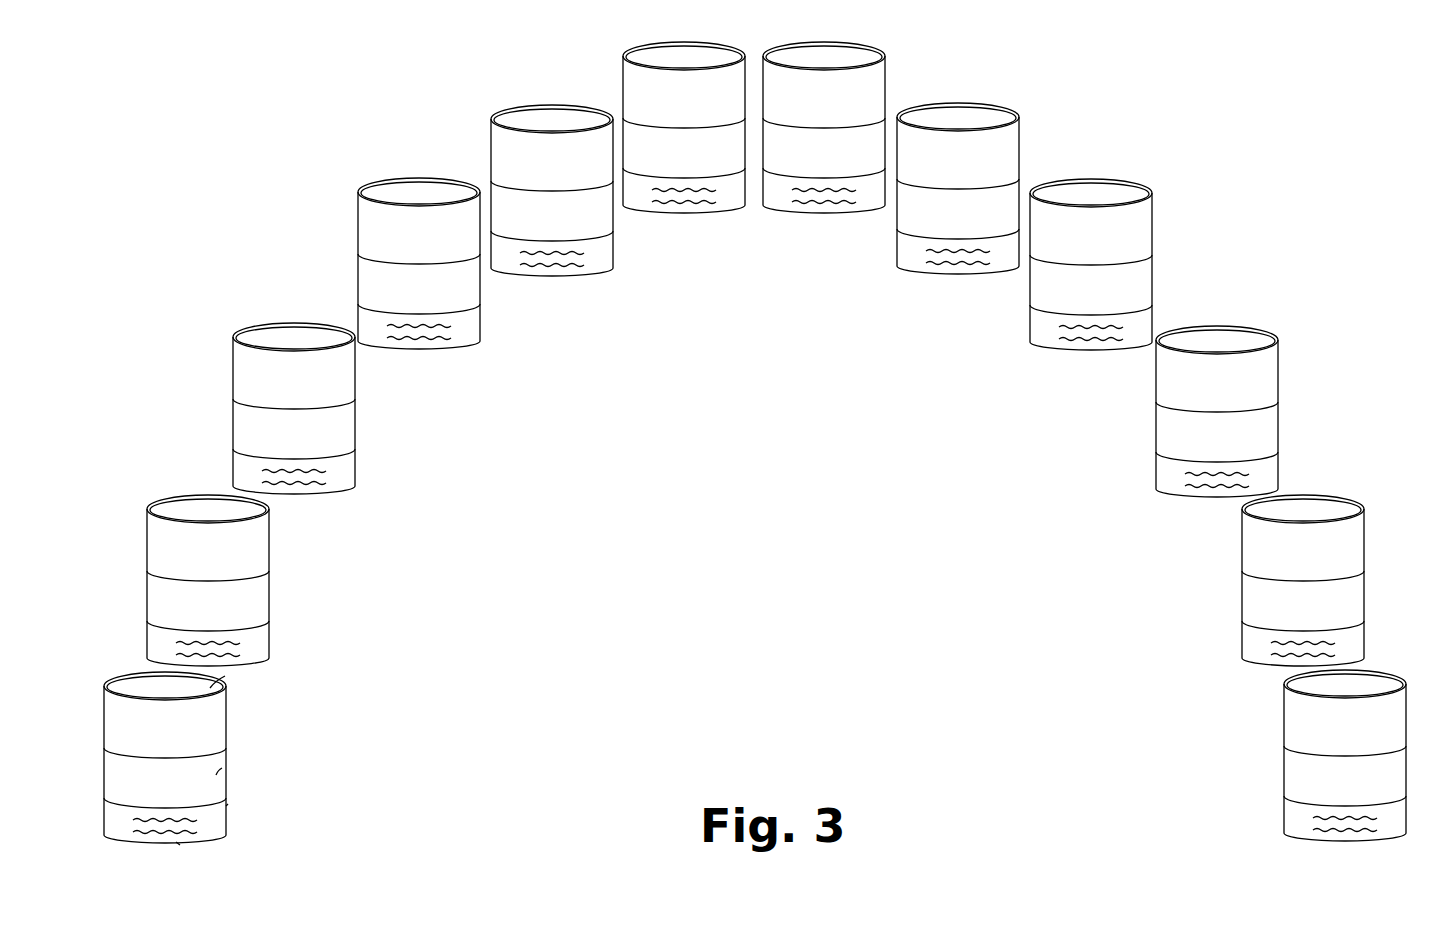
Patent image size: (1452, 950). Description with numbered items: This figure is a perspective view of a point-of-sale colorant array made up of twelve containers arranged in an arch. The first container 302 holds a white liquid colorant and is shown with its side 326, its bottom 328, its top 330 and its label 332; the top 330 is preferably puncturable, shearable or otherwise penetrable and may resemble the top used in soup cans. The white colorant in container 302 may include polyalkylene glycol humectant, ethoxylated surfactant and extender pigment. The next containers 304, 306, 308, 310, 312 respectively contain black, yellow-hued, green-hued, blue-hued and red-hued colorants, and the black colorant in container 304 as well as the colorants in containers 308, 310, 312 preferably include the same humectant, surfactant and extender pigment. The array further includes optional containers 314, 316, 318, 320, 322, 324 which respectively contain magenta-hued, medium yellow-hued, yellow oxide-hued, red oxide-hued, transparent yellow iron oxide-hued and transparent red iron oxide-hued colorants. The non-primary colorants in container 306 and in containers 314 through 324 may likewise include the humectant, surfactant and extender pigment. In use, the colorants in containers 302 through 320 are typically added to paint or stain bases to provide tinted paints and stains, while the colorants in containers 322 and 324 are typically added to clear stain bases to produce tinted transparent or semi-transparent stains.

The container 302 is at (123, 676).
The container 304 is at (160, 497).
The container 306 is at (246, 324).
The container 308 is at (362, 179).
The container 310 is at (506, 108).
The container 312 is at (643, 48).
The container 314 is at (867, 47).
The container 316 is at (990, 102).
The container 318 is at (1140, 179).
The container 320 is at (1262, 326).
The container 322 is at (1352, 495).
The container 324 is at (1392, 670).
The side 326 is at (228, 804).
The bottom 328 is at (176, 843).
The top 330 is at (225, 676).
The label 332 is at (222, 768).